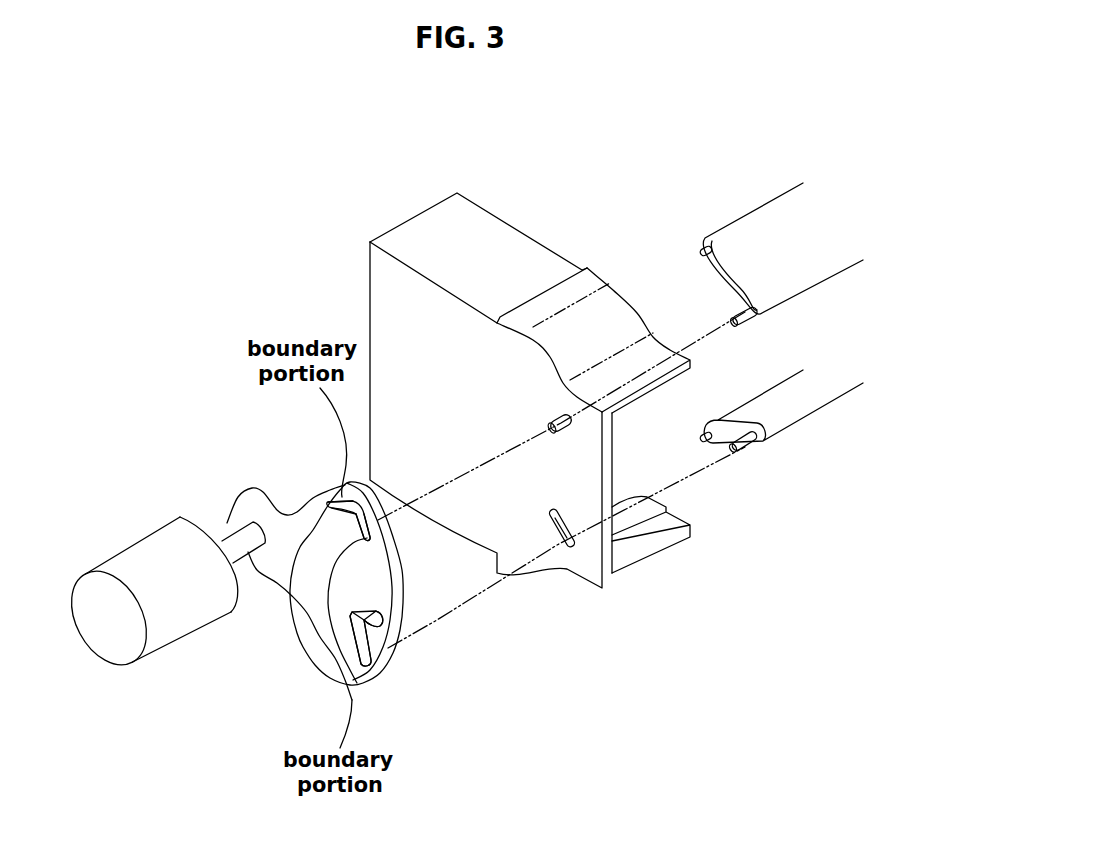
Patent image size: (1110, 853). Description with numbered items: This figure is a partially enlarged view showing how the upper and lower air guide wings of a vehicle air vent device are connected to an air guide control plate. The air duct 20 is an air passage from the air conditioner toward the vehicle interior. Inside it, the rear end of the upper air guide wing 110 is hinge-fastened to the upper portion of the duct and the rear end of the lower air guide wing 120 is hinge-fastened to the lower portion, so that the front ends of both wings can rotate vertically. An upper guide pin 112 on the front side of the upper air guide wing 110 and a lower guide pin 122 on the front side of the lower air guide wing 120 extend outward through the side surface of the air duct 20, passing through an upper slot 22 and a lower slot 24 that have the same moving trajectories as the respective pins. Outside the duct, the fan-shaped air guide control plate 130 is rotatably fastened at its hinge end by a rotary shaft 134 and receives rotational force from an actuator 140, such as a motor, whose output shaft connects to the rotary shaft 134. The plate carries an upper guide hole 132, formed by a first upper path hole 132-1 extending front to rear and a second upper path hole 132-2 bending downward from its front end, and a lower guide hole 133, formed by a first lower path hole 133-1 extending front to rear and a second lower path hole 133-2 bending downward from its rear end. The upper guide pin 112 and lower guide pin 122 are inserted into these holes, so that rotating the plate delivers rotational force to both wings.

The air duct 20 is at (512, 220).
The upper slot 22 is at (570, 433).
The lower slot 24 is at (562, 525).
The upper air guide wing 110 is at (745, 215).
The upper guide pin 112 is at (747, 322).
The lower air guide wing 120 is at (820, 428).
The lower guide pin 122 is at (745, 450).
The air guide control plate 130 is at (312, 492).
The upper guide hole 132 is at (273, 705).
The first upper path hole 132-1 is at (288, 570).
The second upper path hole 132-2 is at (367, 537).
The lower guide hole 133 is at (510, 687).
The first lower path hole 133-1 is at (385, 633).
The second lower path hole 133-2 is at (356, 668).
The rotary shaft 134 is at (240, 540).
The actuator 140 is at (138, 553).